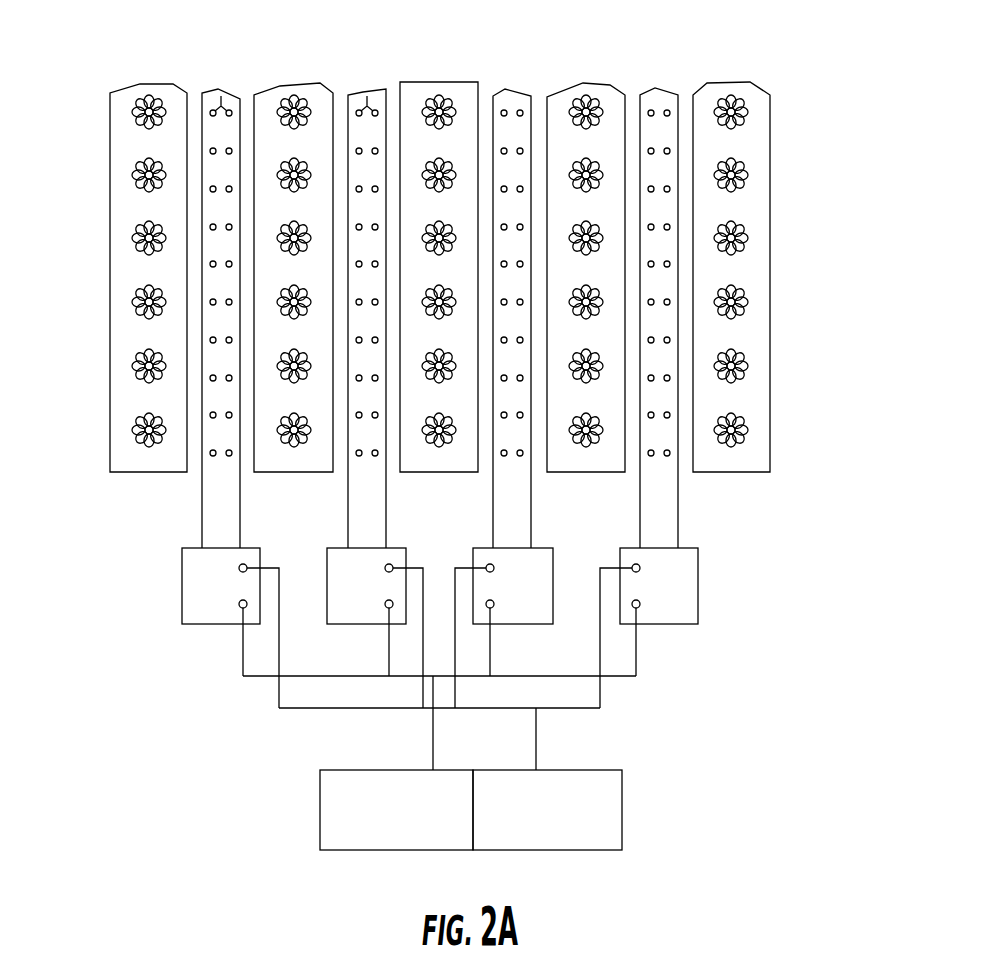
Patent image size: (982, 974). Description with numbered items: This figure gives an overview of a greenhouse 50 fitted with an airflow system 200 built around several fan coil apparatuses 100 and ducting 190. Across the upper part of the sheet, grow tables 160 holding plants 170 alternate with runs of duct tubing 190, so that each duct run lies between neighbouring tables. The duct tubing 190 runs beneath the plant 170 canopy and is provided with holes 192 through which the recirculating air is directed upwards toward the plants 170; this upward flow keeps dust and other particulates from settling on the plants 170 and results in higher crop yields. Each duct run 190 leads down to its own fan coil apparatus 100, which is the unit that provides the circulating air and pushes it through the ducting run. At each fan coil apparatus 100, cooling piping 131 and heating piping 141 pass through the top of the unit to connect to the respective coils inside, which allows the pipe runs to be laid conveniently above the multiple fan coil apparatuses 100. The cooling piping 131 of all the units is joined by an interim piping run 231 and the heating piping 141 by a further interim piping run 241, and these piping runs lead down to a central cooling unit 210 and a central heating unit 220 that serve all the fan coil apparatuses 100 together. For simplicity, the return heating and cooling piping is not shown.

The greenhouse 50 is at (74, 58).
The fan coil apparatus 100 is at (182, 560).
The cooling piping 131 is at (239, 604).
The heating piping 141 is at (383, 571).
The grow table 160 is at (109, 352).
The plant 170 is at (132, 238).
The ducting 190 is at (513, 106).
The holes 192 is at (221, 100).
The airflow system 200 is at (812, 357).
The central cooling unit 210 is at (338, 850).
The central heating unit 220 is at (555, 850).
The interim piping run 231 is at (637, 662).
The interim piping run 241 is at (322, 709).